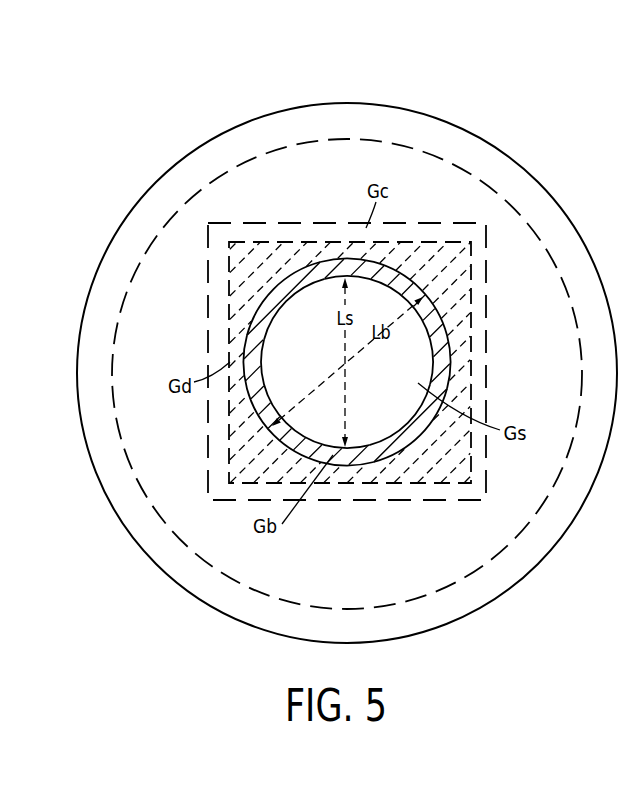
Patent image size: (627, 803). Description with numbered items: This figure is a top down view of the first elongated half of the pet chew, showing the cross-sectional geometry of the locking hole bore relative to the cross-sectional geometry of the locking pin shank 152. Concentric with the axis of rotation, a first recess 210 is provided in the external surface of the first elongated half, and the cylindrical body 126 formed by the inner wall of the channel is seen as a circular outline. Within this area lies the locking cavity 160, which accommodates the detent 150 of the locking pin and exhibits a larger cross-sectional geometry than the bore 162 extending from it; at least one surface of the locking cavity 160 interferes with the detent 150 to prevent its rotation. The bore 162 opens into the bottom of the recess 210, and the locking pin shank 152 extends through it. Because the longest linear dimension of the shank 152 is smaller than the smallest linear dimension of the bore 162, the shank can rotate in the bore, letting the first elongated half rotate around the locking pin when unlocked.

The first recess 210 is at (278, 111).
The cylindrical body 126 is at (247, 161).
The detent 150 is at (207, 322).
The locking cavity 160 is at (317, 222).
The locking pin shank 152 is at (420, 348).
The bore 162 is at (292, 434).